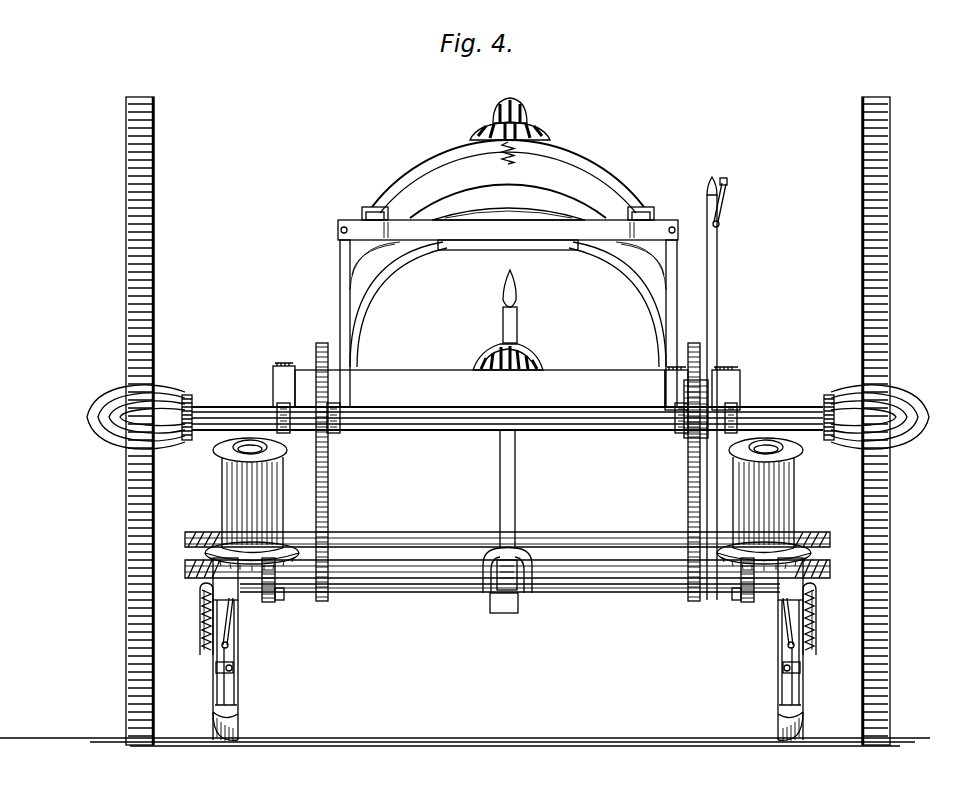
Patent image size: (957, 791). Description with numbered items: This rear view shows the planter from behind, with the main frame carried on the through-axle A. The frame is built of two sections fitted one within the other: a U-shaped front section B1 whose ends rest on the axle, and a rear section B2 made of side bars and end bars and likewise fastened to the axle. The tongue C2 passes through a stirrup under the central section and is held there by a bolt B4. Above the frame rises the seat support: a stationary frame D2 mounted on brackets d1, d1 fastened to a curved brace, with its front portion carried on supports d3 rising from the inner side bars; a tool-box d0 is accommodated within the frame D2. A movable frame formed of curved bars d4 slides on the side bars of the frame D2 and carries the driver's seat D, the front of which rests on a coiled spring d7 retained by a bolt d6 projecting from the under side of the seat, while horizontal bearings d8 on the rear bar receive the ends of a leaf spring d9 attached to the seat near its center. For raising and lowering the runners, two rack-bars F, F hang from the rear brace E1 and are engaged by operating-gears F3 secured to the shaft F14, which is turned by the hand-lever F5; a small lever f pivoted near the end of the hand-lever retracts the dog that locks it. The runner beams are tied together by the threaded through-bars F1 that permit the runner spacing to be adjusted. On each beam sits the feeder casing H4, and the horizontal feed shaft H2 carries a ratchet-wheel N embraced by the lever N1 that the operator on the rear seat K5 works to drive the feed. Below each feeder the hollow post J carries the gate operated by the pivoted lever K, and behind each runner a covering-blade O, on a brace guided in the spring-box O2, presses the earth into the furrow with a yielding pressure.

The driver's seat D is at (522, 116).
The bolt d6 is at (516, 156).
The coiled spring d7 is at (520, 187).
The leaf spring d9 is at (613, 177).
The bearings d8 is at (672, 202).
The curved bars d4 is at (683, 211).
The stationary frame D2 is at (508, 307).
The brackets d1 is at (622, 256).
The tool-box d0 is at (496, 250).
The supports d3 is at (678, 270).
The lever f is at (727, 193).
The hand-lever F5 is at (717, 262).
The lever N1 is at (517, 314).
The rear seat K5 is at (535, 353).
The rack-bars F is at (329, 455).
The front section of main frame B1 is at (280, 385).
The rear section of main frame B2 is at (342, 389).
The through-axle A is at (207, 420).
The tongue C2 is at (480, 388).
The bolt B4 is at (735, 382).
The shaft F14 is at (463, 420).
The operating-gears F3 is at (700, 442).
The casing H4 is at (818, 493).
The rear brace E1 is at (577, 545).
The through rods F1 is at (650, 570).
The horizontal shaft H2 is at (421, 586).
The ratchet-wheel N is at (530, 592).
The pivoted lever K is at (228, 634).
The post J is at (233, 679).
The covering-blade O is at (230, 733).
The box O2 is at (823, 633).